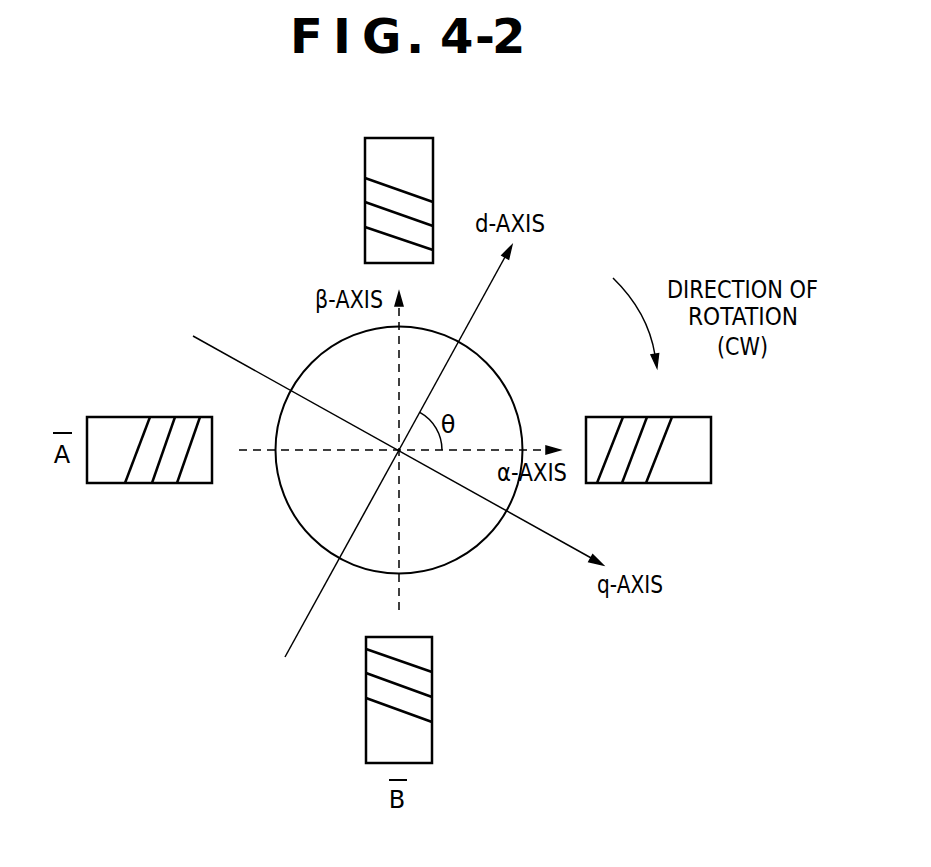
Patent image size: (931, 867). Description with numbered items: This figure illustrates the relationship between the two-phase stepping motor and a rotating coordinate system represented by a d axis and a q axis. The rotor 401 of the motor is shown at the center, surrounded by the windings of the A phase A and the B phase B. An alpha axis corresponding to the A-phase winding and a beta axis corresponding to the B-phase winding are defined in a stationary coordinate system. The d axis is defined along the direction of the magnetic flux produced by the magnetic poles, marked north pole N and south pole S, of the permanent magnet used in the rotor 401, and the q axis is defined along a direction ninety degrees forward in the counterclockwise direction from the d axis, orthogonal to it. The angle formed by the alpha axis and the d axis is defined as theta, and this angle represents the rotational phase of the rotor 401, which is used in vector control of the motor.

The rotor 401 is at (472, 553).
The A phase A is at (664, 450).
The B phase B is at (399, 182).
The rotor magnet north pole N is at (455, 347).
The rotor magnet south pole S is at (342, 553).